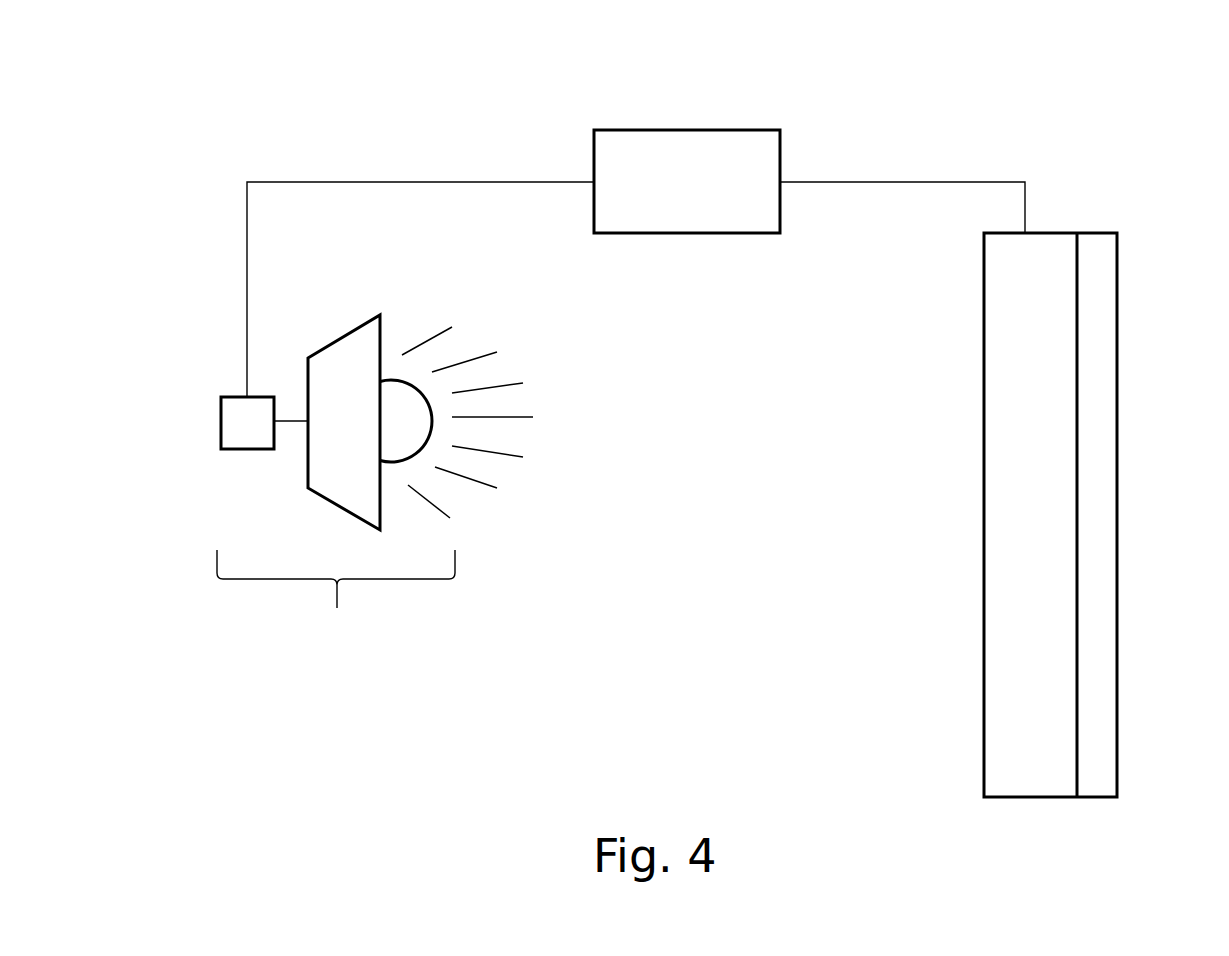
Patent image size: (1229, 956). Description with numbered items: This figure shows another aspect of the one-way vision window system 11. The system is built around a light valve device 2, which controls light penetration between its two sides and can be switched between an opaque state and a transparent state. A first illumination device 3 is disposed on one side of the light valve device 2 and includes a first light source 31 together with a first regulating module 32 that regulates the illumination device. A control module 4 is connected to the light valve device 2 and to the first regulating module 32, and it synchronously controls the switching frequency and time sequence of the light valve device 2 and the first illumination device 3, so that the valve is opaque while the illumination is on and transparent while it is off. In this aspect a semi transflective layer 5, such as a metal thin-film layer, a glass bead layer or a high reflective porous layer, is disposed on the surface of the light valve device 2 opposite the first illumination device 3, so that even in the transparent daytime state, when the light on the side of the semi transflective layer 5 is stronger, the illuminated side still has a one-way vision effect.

The one-way vision window system 11 is at (250, 153).
The control module 4 is at (667, 150).
The first illumination device 3 is at (336, 599).
The first light source 31 is at (350, 347).
The first regulating module 32 is at (236, 434).
The light valve device 2 is at (1045, 418).
The semi transflective layer 5 is at (1097, 315).